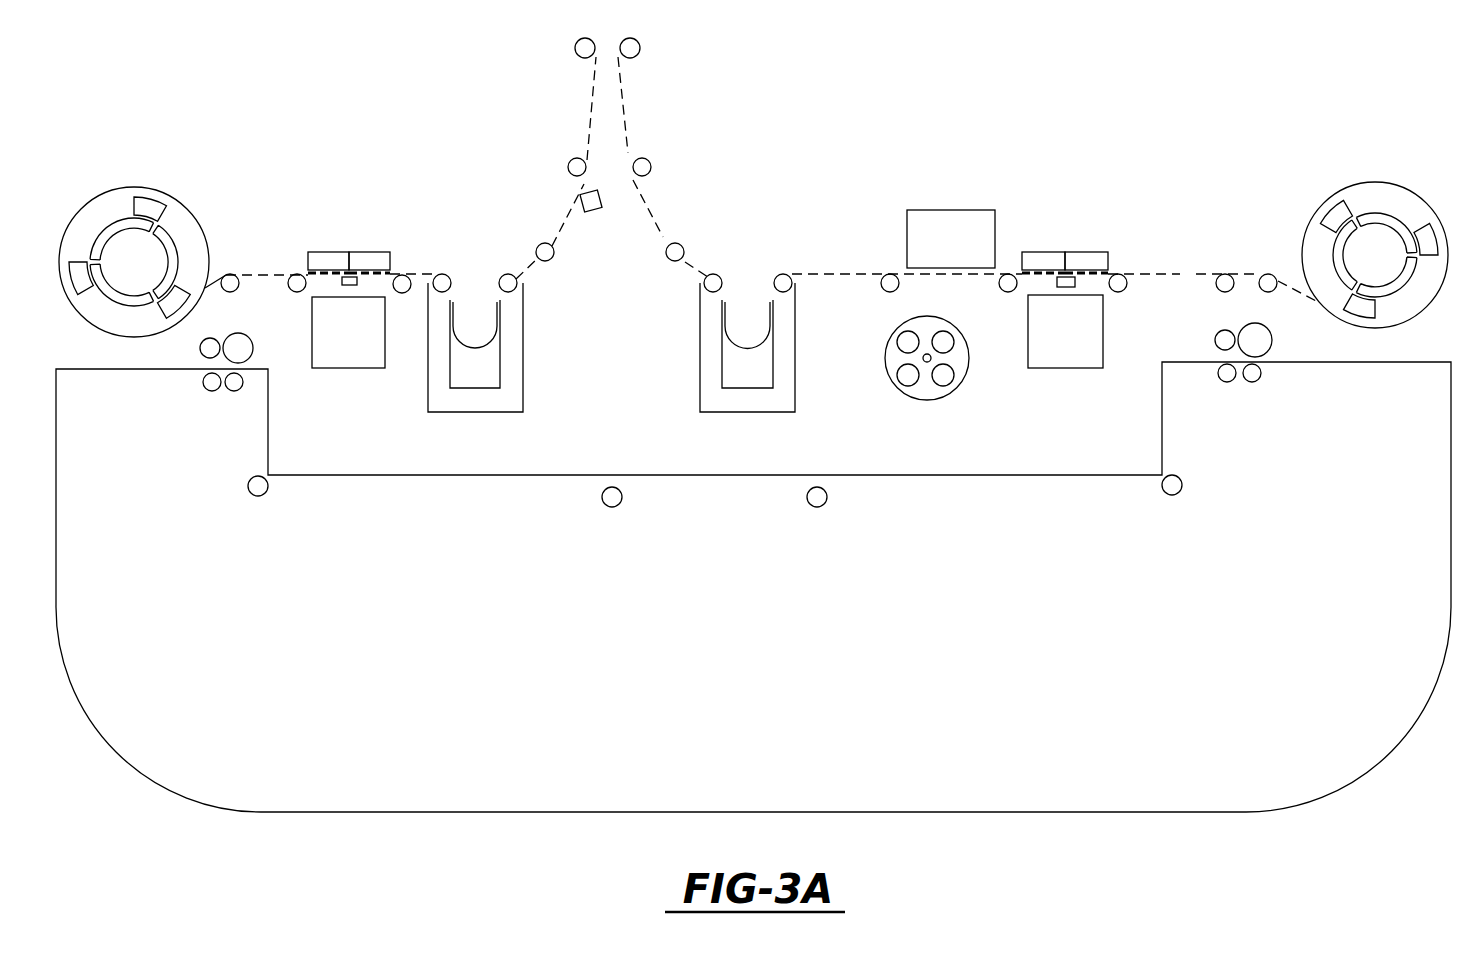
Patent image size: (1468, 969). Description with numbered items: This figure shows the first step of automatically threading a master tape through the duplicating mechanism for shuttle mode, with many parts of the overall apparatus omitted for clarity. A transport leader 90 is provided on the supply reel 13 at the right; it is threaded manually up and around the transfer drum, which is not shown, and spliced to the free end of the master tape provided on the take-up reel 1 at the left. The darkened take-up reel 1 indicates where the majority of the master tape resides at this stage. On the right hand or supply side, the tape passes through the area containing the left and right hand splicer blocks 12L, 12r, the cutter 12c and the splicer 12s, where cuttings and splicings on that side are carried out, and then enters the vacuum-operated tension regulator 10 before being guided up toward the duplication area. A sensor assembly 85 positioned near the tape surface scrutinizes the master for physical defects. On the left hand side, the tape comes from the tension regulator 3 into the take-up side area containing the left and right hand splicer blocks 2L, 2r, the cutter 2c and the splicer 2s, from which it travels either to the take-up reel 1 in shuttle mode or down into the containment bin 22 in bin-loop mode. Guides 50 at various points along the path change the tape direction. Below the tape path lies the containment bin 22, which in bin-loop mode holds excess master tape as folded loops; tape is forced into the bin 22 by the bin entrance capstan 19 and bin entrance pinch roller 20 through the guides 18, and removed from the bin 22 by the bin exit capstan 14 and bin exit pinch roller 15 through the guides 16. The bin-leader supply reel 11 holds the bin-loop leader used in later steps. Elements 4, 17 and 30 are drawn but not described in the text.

The take-up reel 1 is at (97, 199).
The left hand splicer block 2L is at (323, 252).
The right hand splicer block 2r is at (370, 252).
The cutter 2c is at (342, 282).
The splicer 2s is at (348, 293).
The tension regulator 3 is at (472, 298).
The tape sensor 4 is at (570, 193).
The transport leader 90 is at (659, 209).
The vacuum-operated tension regulator 10 is at (753, 315).
The sensor assembly 85 is at (907, 227).
The guides 50 is at (884, 291).
The bin-leader supply reel 11 is at (897, 388).
The left hand splicer block 12L is at (1040, 252).
The right hand splicer block 12r is at (1097, 252).
The cutter 12c is at (1057, 282).
The splicer 12s is at (1067, 299).
The bin exit capstan 14 is at (1215, 338).
The bin exit pinch roller 15 is at (1273, 343).
The supply reel 13 is at (1410, 187).
The guides 16 is at (1224, 382).
The mounting rollers 17 is at (264, 495).
The guides 18 is at (208, 391).
The bin entrance capstan 19 is at (200, 347).
The bin entrance pinch roller 20 is at (256, 346).
The tape path 30 is at (1192, 270).
The containment bin 22 is at (733, 666).